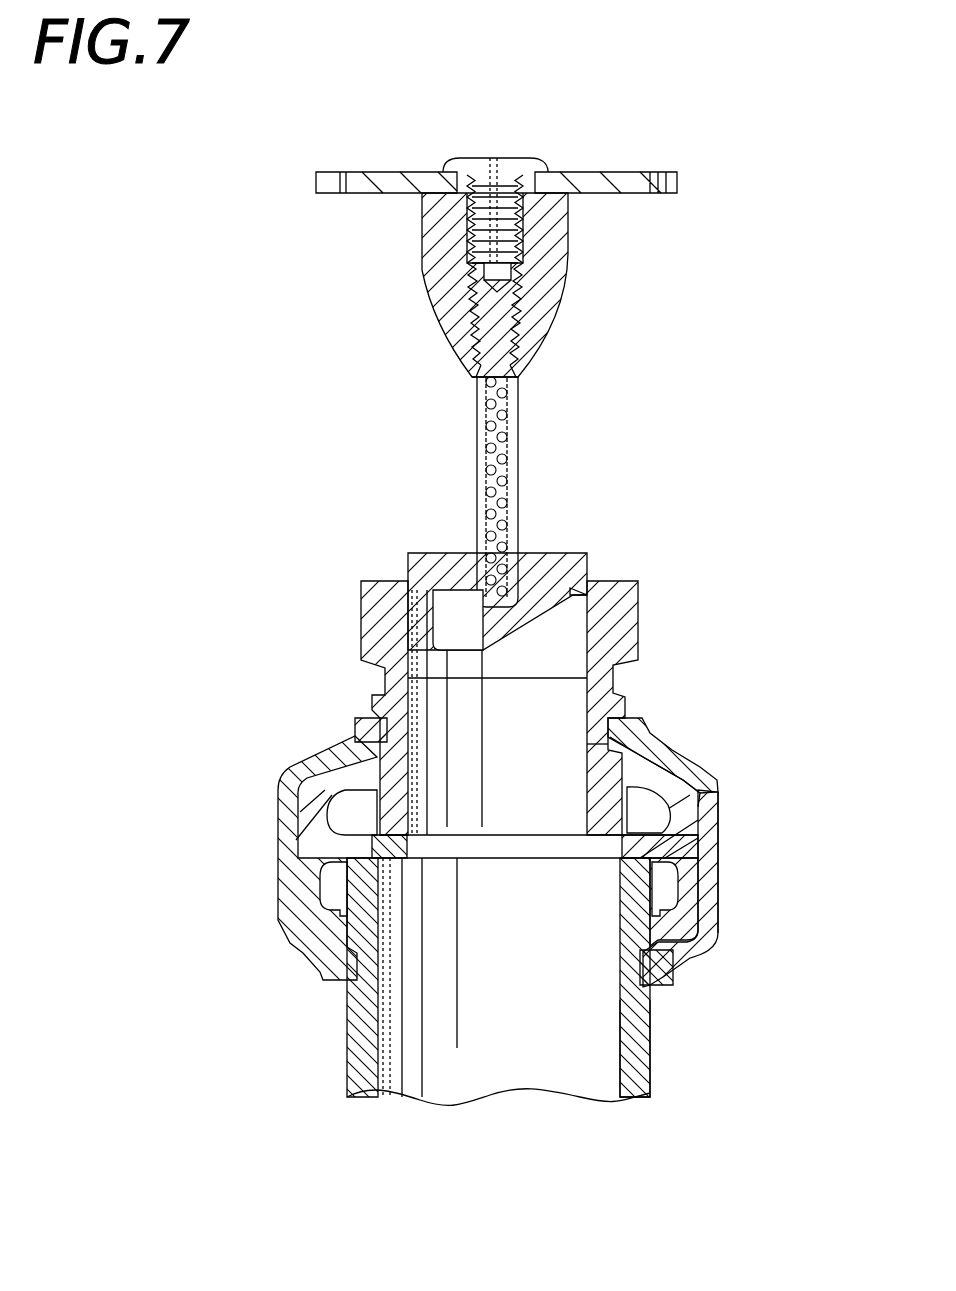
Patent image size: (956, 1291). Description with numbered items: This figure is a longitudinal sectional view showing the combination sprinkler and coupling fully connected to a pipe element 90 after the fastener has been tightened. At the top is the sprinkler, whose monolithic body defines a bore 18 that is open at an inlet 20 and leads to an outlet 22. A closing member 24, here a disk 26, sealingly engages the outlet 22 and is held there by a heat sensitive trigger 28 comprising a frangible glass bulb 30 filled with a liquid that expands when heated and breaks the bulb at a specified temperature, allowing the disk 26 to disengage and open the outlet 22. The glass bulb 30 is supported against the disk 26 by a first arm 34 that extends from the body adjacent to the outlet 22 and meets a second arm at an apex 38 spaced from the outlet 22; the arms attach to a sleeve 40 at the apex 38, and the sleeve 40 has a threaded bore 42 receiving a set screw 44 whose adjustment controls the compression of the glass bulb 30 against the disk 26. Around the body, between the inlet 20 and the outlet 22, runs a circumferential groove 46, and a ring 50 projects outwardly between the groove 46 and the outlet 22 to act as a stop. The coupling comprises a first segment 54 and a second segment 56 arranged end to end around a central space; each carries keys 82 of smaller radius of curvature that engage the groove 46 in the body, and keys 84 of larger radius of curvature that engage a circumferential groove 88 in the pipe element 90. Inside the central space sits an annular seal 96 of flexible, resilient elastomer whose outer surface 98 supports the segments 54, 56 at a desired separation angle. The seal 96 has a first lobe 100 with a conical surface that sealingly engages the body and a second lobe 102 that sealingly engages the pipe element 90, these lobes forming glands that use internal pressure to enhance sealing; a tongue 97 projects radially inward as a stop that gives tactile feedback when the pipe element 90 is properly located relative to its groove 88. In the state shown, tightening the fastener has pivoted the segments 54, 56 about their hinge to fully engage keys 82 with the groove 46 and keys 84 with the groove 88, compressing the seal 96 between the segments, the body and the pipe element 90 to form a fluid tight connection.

The bore 18 is at (543, 719).
The inlet 20 is at (468, 830).
The outlet 22 is at (620, 602).
The closing member 24 is at (561, 573).
The disk 26 is at (545, 565).
The trigger 28 is at (591, 486).
The glass bulb 30 is at (515, 440).
The first arm 34 is at (480, 470).
The apex 38 is at (608, 285).
The sleeve 40 is at (555, 260).
The threaded bore 42 is at (540, 322).
The set screw 44 is at (476, 380).
The circumferential groove 46 is at (600, 744).
The ring 50 is at (627, 695).
The first segment 54 is at (720, 918).
The second segment 56 is at (292, 946).
The key 82 is at (378, 735).
The key 84 is at (652, 978).
The circumferential groove 88 is at (640, 975).
The pipe element 90 is at (640, 1078).
The annular seal 96 is at (650, 848).
The tongue 97 is at (620, 855).
The outer surface 98 is at (700, 876).
The first lobe 100 is at (628, 790).
The second lobe 102 is at (642, 923).